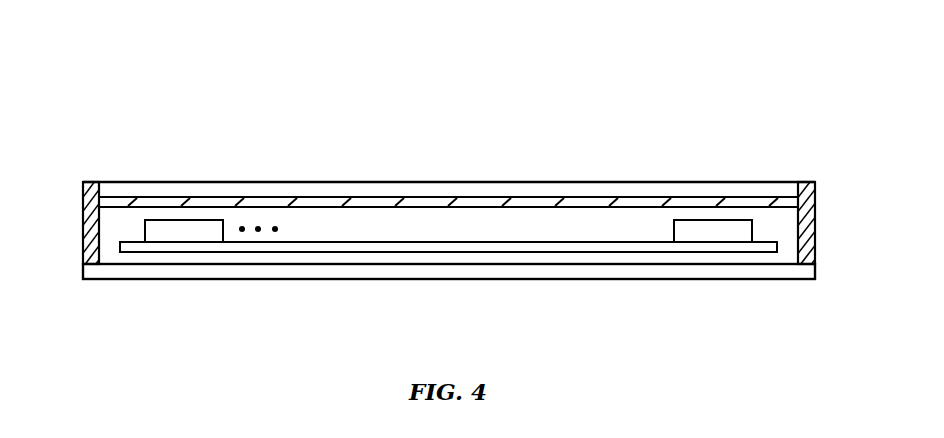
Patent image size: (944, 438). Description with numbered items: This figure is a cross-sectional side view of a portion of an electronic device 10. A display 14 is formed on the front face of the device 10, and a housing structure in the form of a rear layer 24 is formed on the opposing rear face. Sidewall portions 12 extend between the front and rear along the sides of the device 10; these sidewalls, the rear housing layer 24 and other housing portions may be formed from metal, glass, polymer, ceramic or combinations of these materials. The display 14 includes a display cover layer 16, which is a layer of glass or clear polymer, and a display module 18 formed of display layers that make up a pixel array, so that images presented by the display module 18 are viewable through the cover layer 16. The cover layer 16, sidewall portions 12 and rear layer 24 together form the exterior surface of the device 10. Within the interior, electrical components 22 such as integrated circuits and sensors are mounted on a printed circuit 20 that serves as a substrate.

The electronic device 10 is at (702, 90).
The sidewall portions 12 is at (87, 227).
The display 14 is at (490, 155).
The display cover layer 16 is at (302, 190).
The display module 18 is at (378, 200).
The printed circuit 20 is at (243, 247).
The components 22 is at (725, 230).
The rear layer 24 is at (315, 270).